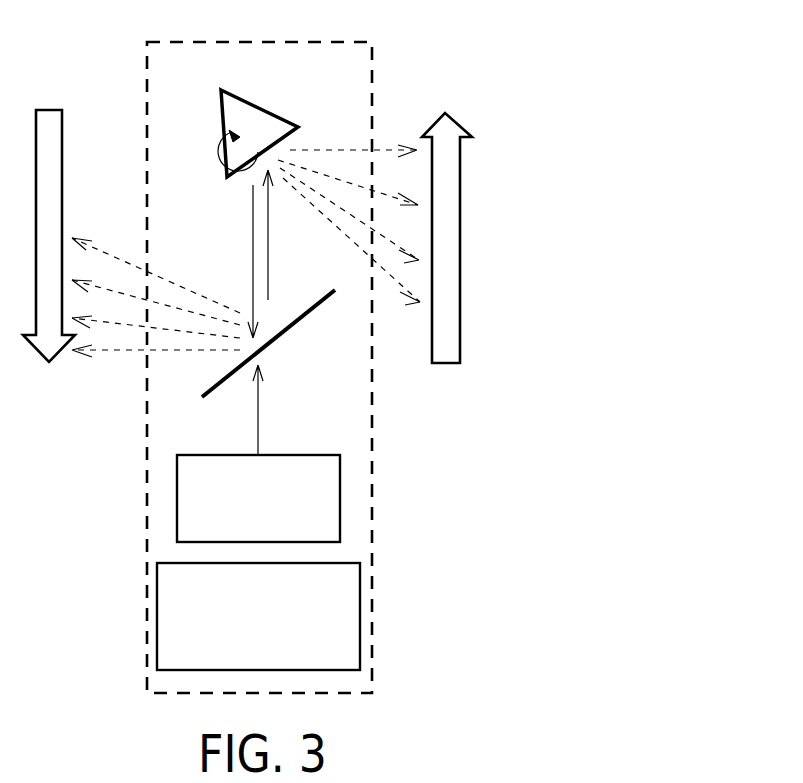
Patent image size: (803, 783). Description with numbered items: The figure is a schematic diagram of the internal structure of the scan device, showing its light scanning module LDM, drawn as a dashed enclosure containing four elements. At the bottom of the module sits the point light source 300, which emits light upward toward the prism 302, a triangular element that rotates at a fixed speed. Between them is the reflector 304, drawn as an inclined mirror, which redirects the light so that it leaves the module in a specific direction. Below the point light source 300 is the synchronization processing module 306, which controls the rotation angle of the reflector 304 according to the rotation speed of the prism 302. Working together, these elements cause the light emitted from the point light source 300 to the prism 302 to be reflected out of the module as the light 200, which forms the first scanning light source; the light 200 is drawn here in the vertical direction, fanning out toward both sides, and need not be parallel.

The light scanning module LDM is at (372, 42).
The light 200 is at (107, 257).
The point light source 300 is at (341, 491).
The prism 302 is at (262, 103).
The reflector 304 is at (275, 338).
The synchronization processing module 306 is at (361, 605).